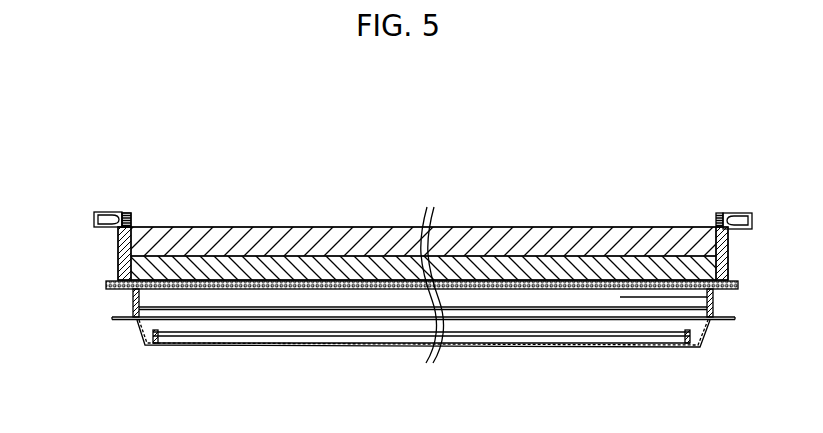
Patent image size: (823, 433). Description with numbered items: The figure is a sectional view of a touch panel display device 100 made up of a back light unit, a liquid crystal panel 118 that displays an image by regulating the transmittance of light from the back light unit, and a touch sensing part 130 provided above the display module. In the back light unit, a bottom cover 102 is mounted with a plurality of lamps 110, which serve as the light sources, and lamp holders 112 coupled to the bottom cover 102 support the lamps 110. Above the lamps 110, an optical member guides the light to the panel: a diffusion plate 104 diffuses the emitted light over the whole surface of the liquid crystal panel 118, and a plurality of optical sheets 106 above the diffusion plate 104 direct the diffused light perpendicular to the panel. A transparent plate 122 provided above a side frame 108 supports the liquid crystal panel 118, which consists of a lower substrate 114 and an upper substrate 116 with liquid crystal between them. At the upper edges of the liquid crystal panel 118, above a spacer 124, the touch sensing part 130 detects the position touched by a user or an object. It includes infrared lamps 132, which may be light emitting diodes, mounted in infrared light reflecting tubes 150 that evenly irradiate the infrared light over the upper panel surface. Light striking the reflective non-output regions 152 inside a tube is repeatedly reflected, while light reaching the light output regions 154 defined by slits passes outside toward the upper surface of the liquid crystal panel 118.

The touch panel display device 100 is at (204, 128).
The bottom cover 102 is at (703, 339).
The diffusion plate 104 is at (697, 311).
The optical sheets 106 is at (162, 300).
The side frame 108 is at (713, 298).
The lamps 110 is at (226, 336).
The lamp holders 112 is at (153, 338).
The lower substrate 114 is at (660, 258).
The upper substrate 116 is at (690, 238).
The liquid crystal panel 118 is at (727, 161).
The transparent plate 122 is at (738, 285).
The spacer 124 is at (728, 241).
The touch sensing part 130 is at (94, 217).
The infrared lamps 132 is at (102, 216).
The infrared light reflecting tubes 150 is at (111, 214).
The non-output regions 152 is at (129, 213).
The light output regions 154 is at (173, 199).